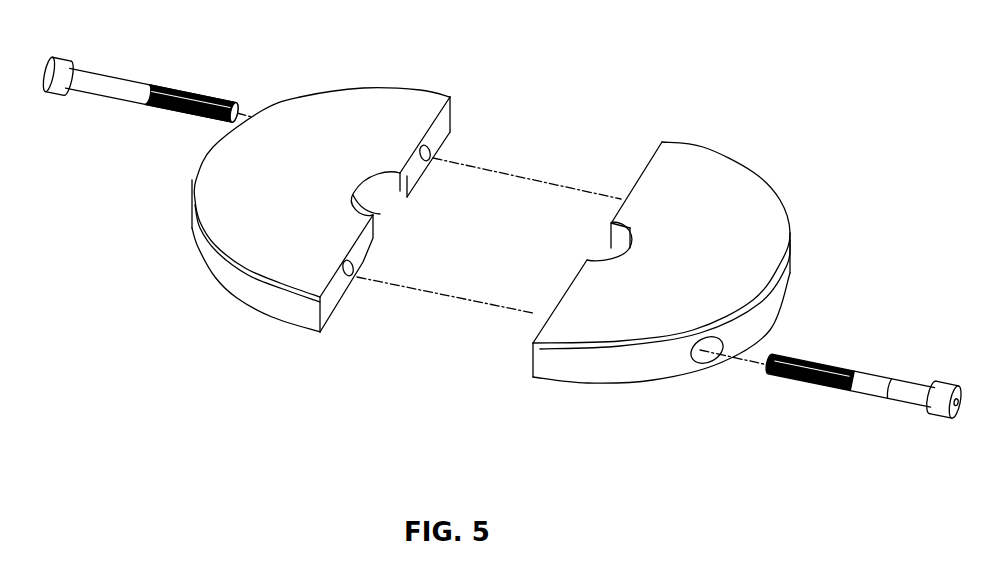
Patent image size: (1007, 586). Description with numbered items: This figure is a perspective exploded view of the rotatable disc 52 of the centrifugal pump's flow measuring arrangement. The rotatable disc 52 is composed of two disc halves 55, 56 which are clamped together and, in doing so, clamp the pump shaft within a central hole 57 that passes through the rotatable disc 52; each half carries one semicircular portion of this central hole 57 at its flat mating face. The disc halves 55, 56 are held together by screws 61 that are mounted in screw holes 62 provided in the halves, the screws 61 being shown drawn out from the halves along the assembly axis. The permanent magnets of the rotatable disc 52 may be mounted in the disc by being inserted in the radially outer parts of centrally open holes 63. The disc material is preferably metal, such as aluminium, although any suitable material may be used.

The rotatable disc 52 is at (502, 235).
The disc half of rotatable disc 55 is at (363, 100).
The disc half of rotatable disc 56 is at (708, 173).
The central hole of rotatable disc 57 is at (607, 247).
The screws 61 is at (107, 82).
The screw holes 62 is at (348, 282).
The holes for magnets 63 is at (378, 209).